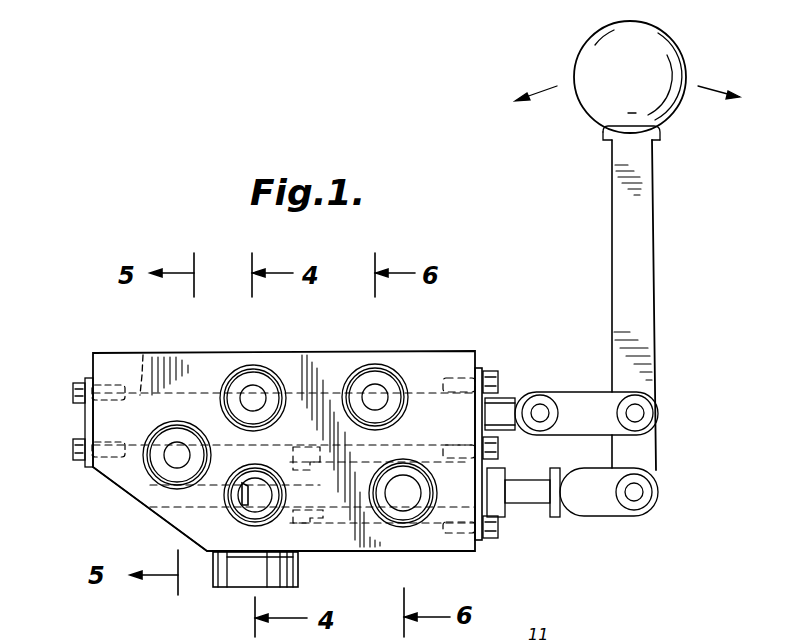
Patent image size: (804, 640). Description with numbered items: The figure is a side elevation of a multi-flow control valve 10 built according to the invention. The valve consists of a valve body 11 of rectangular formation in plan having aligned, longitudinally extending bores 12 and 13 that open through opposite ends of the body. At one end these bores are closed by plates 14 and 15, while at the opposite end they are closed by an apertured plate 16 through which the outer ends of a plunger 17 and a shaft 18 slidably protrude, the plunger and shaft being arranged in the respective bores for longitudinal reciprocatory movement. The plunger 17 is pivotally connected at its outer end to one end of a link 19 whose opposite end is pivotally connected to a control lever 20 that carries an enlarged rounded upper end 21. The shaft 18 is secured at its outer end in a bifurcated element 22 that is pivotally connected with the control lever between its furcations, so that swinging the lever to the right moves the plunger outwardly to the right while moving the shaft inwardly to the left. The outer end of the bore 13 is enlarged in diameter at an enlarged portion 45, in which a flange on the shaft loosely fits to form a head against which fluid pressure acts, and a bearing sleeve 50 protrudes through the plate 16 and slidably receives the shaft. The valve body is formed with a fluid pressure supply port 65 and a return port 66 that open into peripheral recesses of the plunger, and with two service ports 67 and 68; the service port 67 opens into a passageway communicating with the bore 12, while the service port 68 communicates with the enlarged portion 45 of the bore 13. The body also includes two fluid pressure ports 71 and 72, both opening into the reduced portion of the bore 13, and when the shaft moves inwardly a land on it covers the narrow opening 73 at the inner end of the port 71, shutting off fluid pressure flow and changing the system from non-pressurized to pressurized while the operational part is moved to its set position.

The valve 10 is at (447, 347).
The valve body 11 is at (330, 362).
The bore 12 is at (143, 354).
The bore 13 is at (145, 490).
The plate 14 is at (85, 420).
The plate 15 is at (165, 515).
The apertured plate 16 is at (480, 368).
The plunger 17 is at (500, 405).
The shaft 18 is at (510, 486).
The link 19 is at (578, 408).
The control lever 20 is at (648, 305).
The enlarged rounded upper end 21 is at (594, 103).
The bifurcated element 22 is at (602, 506).
The enlarged portion of the bore 45 is at (335, 520).
The bearing sleeve 50 is at (500, 506).
The fluid pressure supply port 65 is at (373, 382).
The return port 66 is at (254, 392).
The service port 67 is at (163, 457).
The service port 68 is at (418, 510).
The fluid pressure port 71 is at (256, 516).
The fluid pressure port 72 is at (240, 587).
The narrow opening 73 is at (253, 481).